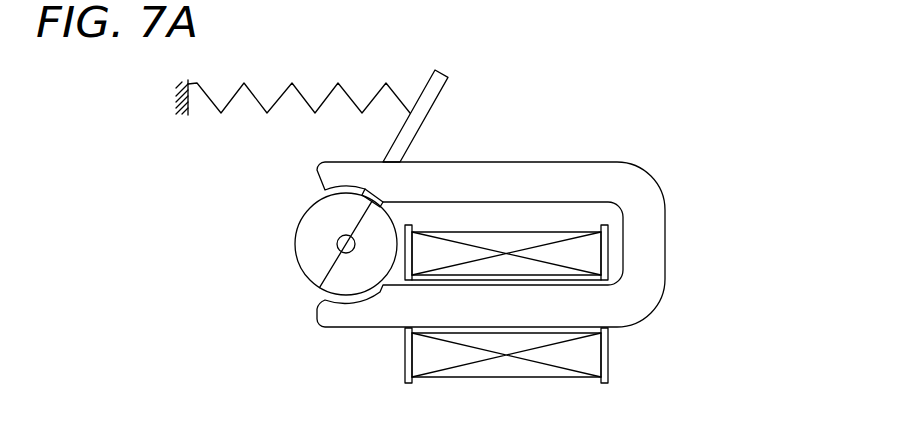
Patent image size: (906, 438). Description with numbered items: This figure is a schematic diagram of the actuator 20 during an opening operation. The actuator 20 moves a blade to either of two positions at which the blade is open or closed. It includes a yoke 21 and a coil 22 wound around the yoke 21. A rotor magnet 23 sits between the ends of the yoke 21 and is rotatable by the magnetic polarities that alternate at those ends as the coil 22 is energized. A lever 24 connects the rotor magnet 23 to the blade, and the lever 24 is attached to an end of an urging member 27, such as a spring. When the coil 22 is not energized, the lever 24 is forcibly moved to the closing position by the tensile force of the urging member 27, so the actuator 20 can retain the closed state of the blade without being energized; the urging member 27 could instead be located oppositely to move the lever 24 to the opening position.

The actuator 20 is at (703, 156).
The yoke 21 is at (667, 247).
The coil 22 is at (523, 226).
The rotor magnet 23 is at (295, 245).
The lever 24 is at (440, 72).
The urging member 27 is at (292, 83).